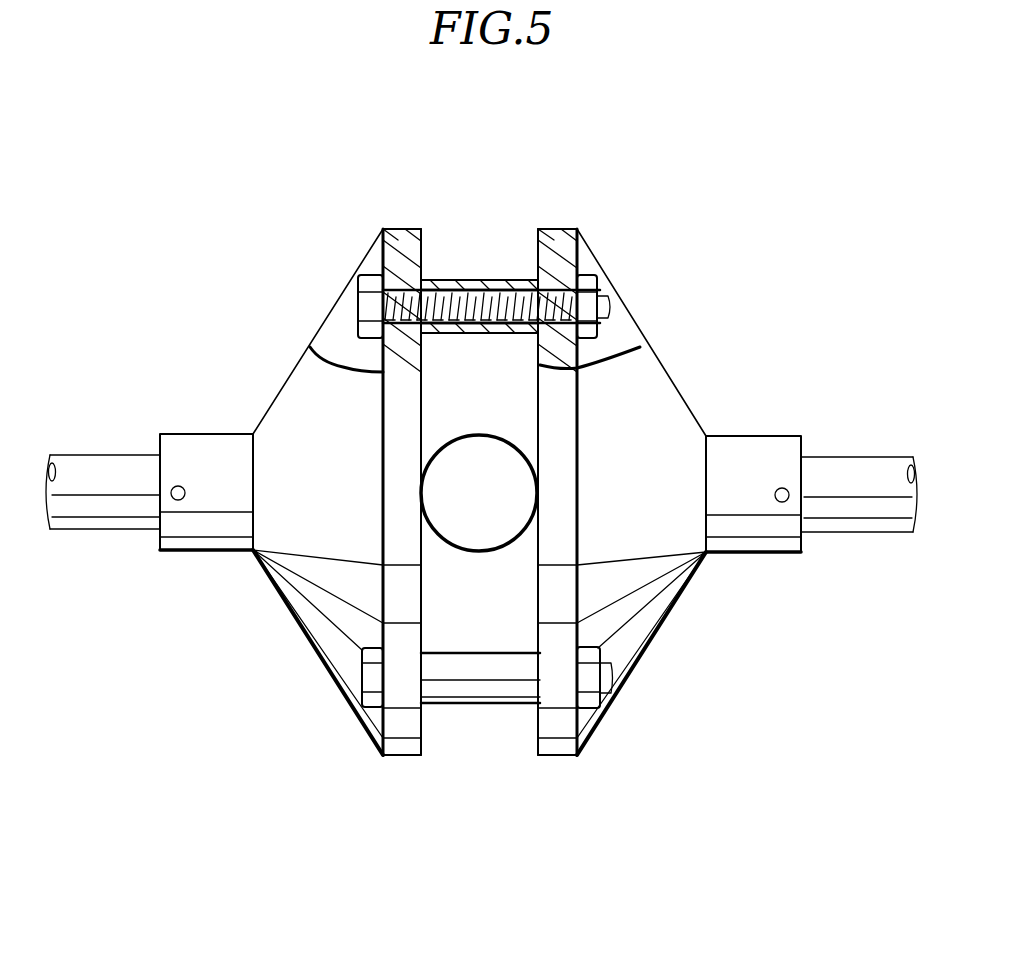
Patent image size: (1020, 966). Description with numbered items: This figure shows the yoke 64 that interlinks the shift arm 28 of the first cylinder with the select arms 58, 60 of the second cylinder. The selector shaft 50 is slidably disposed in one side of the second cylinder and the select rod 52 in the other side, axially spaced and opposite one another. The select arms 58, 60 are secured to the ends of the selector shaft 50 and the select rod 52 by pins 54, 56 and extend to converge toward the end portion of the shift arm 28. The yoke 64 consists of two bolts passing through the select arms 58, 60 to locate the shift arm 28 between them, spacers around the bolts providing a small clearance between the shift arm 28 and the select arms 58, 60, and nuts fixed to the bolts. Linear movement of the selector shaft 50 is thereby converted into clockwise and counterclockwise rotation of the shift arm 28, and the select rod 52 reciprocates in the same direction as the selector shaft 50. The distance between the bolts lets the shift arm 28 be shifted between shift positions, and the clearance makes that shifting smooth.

The shift arm 28 is at (438, 493).
The selector shaft 50 is at (873, 500).
The select rod 52 is at (123, 512).
The pin 54 is at (178, 500).
The pin 56 is at (782, 502).
The select arm 58 is at (395, 738).
The select arm 60 is at (554, 698).
The yoke 64 is at (465, 725).